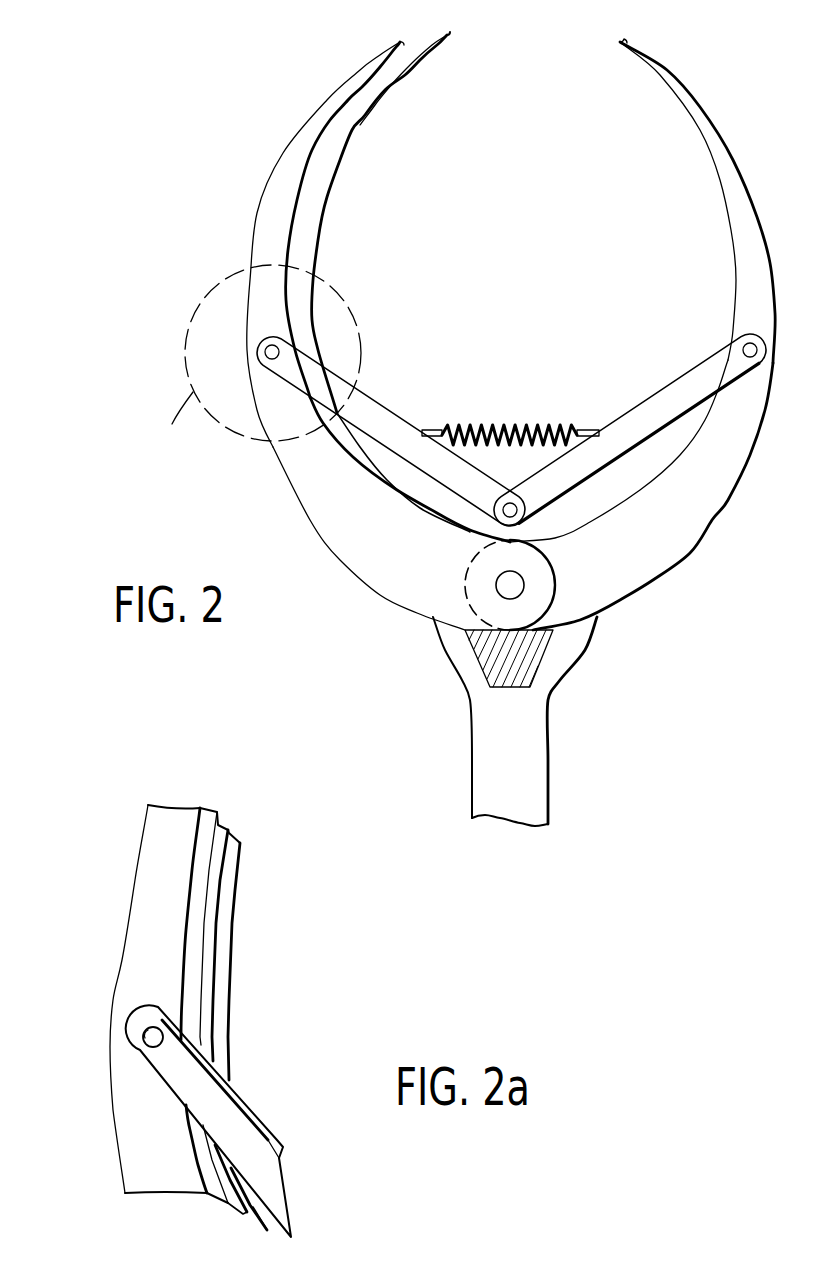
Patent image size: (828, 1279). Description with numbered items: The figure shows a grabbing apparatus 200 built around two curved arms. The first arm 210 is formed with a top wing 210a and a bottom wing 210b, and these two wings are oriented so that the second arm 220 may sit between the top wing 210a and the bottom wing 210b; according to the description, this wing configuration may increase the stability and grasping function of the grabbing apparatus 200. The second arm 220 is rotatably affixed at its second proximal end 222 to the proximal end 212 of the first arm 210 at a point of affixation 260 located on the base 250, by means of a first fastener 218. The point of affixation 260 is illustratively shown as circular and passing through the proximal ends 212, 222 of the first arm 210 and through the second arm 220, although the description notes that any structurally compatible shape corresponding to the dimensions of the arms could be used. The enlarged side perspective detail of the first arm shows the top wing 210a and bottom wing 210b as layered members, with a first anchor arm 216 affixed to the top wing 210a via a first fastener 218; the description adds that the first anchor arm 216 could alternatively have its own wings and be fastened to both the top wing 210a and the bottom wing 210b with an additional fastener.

In FIG. 2, the grabbing apparatus 200 is at (178, 72).
In FIG. 2, the first arm 210 is at (350, 97).
In FIG. 2, the top wing 210a is at (277, 207).
In FIG. 2a, the top wing 210a is at (148, 912).
In FIG. 2, the bottom wing 210b is at (318, 195).
In FIG. 2a, the bottom wing 210b is at (227, 937).
In FIG. 2, the proximal end of the first arm 212 is at (370, 533).
In FIG. 2, the first anchor arm 216 is at (393, 435).
In FIG. 2a, the first anchor arm 216 is at (240, 1133).
In FIG. 2, the first fastener 218 is at (265, 352).
In FIG. 2a, the first fastener 218 is at (143, 1038).
In FIG. 2, the second arm 220 is at (712, 70).
In FIG. 2, the second proximal end 222 is at (637, 552).
In FIG. 2, the base 250 is at (525, 765).
In FIG. 2, the point of affixation 260 is at (510, 633).